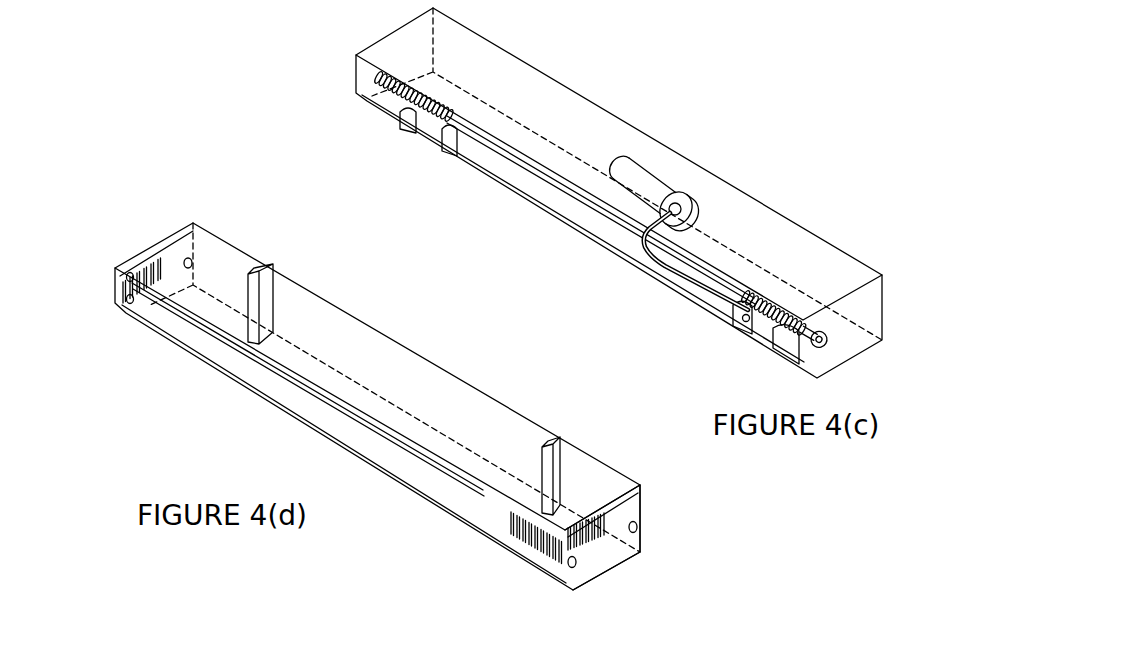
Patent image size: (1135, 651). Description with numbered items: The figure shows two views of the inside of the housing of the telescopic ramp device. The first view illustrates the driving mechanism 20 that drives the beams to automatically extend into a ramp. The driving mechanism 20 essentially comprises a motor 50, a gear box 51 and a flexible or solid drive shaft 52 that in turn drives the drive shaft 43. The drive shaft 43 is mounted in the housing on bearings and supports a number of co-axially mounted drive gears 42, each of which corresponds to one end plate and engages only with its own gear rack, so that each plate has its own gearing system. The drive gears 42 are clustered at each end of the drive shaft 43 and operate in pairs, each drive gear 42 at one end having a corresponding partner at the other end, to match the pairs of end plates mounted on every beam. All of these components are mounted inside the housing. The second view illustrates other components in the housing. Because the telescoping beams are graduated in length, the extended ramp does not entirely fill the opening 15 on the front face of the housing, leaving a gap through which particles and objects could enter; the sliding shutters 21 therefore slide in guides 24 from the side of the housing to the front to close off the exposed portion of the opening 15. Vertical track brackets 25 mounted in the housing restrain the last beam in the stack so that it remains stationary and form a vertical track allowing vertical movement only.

In FIG. 4C, the driving mechanism 20 is at (797, 293).
In FIG. 4C, the drive gear 42 is at (374, 90).
In FIG. 4C, the drive shaft 43 is at (538, 175).
In FIG. 4C, the motor 50 is at (642, 165).
In FIG. 4C, the gear box 51 is at (698, 197).
In FIG. 4C, the flexible or solid drive shaft 52 is at (672, 272).
In FIG. 4D, the opening 15 is at (487, 507).
In FIG. 4D, the sliding shutters 21 is at (158, 315).
In FIG. 4D, the guides 24 is at (615, 532).
In FIG. 4D, the vertical track brackets 25 is at (262, 299).